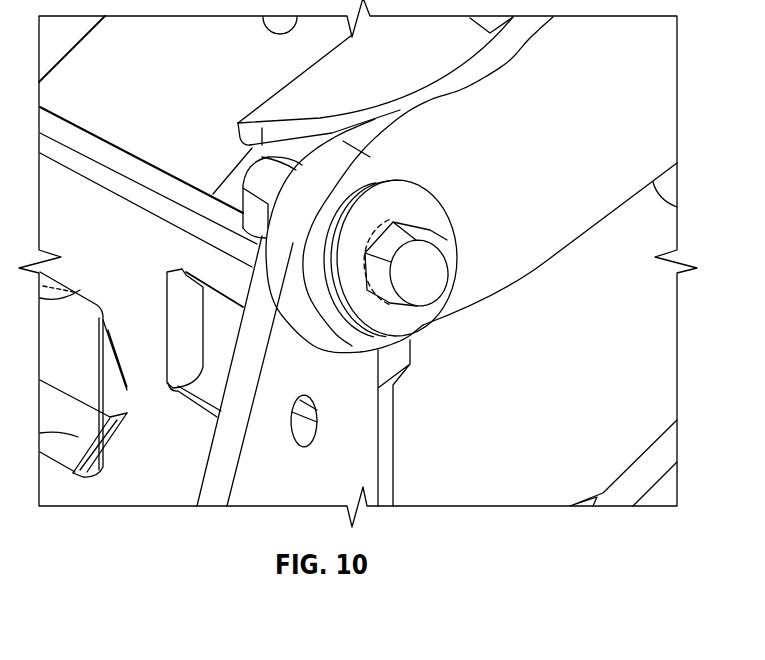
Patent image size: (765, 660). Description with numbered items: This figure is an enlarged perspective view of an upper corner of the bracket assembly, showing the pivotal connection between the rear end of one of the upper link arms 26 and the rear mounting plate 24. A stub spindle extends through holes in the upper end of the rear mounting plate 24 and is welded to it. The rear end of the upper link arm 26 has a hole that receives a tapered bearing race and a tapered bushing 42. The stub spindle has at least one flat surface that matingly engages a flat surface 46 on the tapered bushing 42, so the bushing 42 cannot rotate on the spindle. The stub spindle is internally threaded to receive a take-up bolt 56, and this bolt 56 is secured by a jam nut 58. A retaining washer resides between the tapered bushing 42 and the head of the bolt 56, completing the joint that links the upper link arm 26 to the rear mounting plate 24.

The rear mounting plate 24 is at (387, 430).
The upper link arms 26 is at (573, 228).
The tapered composite bushing 42 is at (445, 208).
The flat interior surface 46 is at (410, 218).
The take-up bolt 56 is at (425, 302).
The jam nut 58 is at (250, 221).